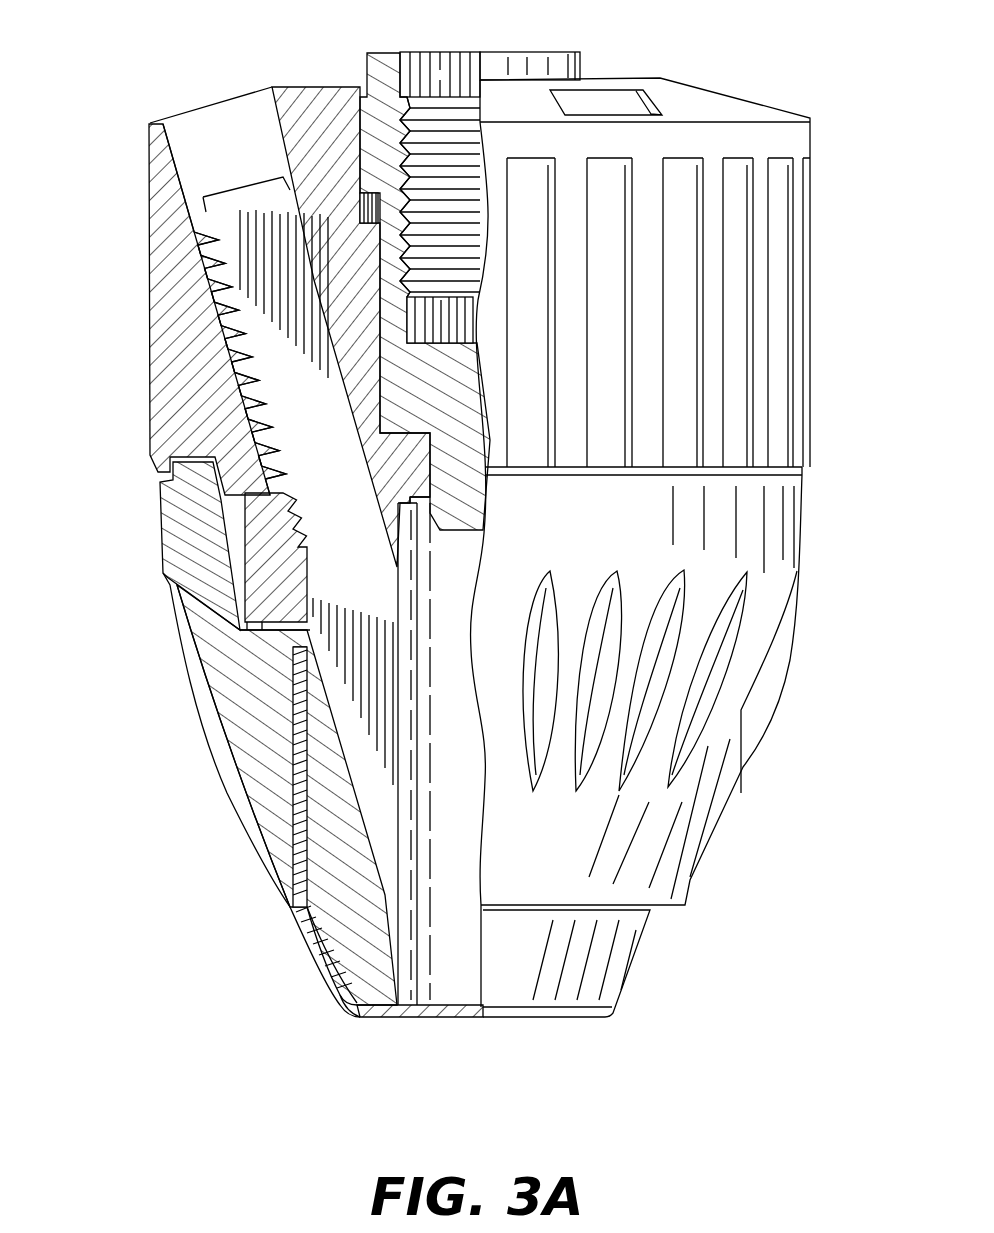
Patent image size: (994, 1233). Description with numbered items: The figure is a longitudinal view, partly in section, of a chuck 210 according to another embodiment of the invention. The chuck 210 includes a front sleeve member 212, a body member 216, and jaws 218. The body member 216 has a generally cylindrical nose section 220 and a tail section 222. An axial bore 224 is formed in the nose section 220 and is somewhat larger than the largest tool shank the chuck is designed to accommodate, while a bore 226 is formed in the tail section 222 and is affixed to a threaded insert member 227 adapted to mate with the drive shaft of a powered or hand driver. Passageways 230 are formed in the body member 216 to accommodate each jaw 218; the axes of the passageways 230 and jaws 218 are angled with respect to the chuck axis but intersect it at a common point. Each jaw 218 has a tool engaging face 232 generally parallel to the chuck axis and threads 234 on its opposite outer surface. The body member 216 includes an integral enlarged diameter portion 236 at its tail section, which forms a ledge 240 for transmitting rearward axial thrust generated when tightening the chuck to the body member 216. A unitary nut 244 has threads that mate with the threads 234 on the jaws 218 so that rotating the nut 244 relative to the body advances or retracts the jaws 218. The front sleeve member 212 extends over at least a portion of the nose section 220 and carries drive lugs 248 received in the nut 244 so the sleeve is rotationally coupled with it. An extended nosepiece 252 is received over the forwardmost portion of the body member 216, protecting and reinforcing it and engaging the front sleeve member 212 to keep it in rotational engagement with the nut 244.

The chuck 210 is at (758, 60).
The front sleeve member 212 is at (275, 878).
The body member 216 is at (293, 833).
The jaws 218 is at (215, 193).
The nose section 220 is at (312, 950).
The tail section 222 is at (303, 90).
The axial bore 224 is at (400, 977).
The bore 226 is at (392, 97).
The threaded insert member 227 is at (397, 90).
The passageways 230 is at (227, 793).
The tool engaging face 232 is at (397, 787).
The threads 234 is at (222, 322).
The integral enlarged diameter portion 236 is at (152, 240).
The ledge 240 is at (250, 480).
The nut 244 is at (250, 585).
The drive lugs 248 is at (292, 633).
The extended nosepiece 252 is at (340, 1013).